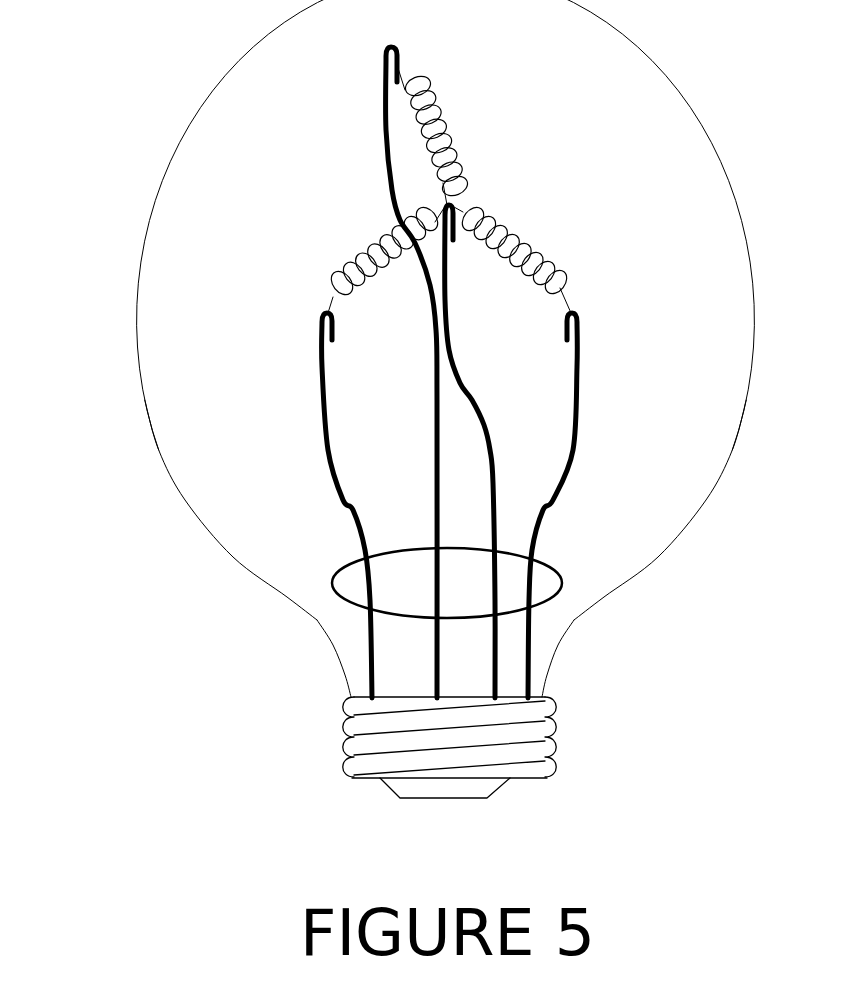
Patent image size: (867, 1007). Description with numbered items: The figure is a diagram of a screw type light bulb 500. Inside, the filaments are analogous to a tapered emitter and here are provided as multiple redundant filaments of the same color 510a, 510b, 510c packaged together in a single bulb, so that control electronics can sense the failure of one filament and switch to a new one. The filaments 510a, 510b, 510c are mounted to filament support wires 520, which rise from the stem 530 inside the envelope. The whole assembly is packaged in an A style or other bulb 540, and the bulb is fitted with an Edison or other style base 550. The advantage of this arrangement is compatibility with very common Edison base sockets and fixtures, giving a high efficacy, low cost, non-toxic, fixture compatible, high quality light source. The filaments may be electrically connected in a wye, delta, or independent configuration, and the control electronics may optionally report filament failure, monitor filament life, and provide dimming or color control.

The screw type light bulb 500 is at (662, 795).
The filament 510a is at (452, 130).
The filament 510b is at (358, 255).
The filament 510c is at (530, 248).
The filament support wires 520 is at (327, 453).
The stem 530 is at (342, 573).
The bulb 540 is at (137, 316).
The base 550 is at (332, 697).